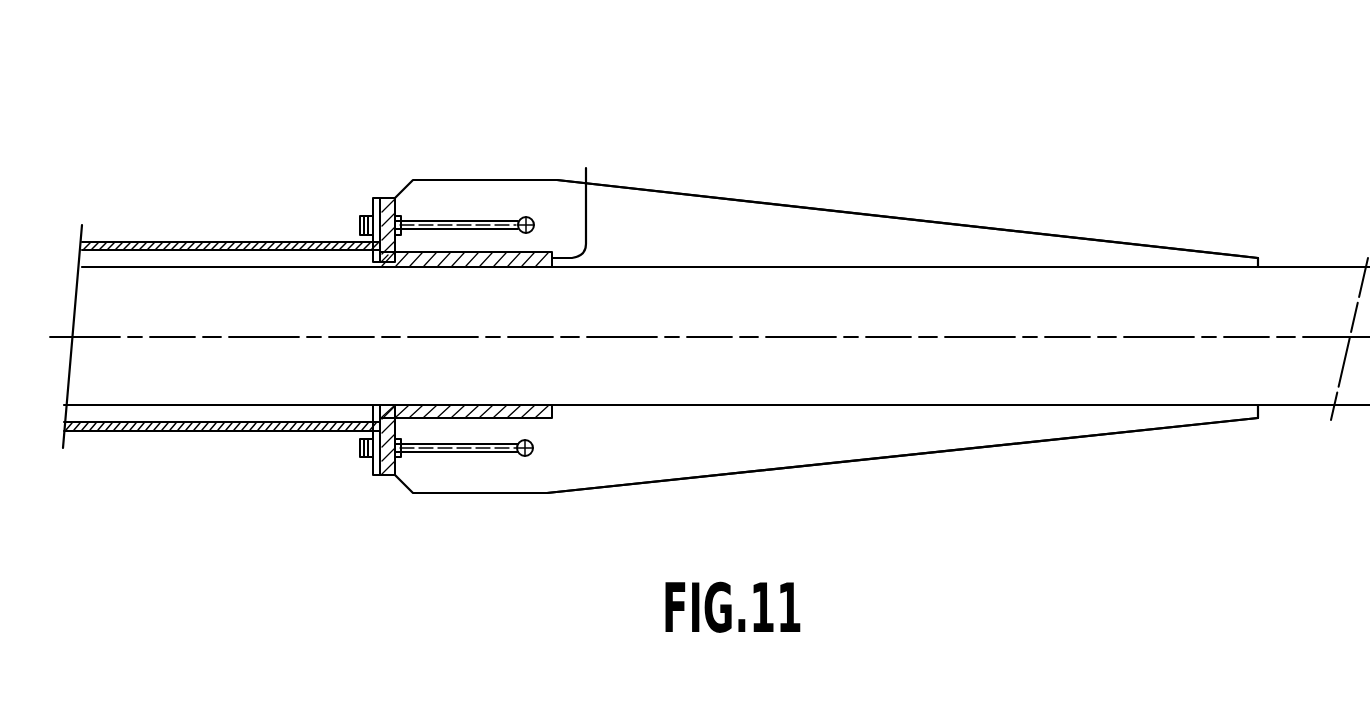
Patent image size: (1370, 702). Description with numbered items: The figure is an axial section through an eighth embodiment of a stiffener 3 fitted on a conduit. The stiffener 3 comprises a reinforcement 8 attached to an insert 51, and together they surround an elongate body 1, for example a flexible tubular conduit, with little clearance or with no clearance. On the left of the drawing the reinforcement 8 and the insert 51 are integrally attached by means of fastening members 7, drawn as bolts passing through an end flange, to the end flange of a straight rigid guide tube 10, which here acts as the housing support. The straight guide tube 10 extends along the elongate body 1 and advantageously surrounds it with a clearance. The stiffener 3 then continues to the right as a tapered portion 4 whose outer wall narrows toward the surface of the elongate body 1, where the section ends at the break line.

The elongate body 1 is at (1317, 283).
The stiffener 3 is at (645, 173).
The tapered portion 4 is at (780, 199).
The insert 51 is at (577, 189).
The fastening members 7 is at (362, 226).
The reinforcement 8 is at (475, 209).
The straight rigid guide tube 10 is at (203, 242).